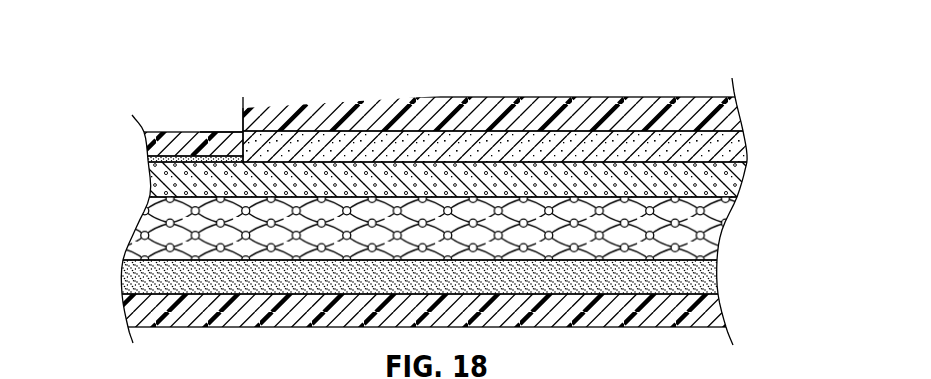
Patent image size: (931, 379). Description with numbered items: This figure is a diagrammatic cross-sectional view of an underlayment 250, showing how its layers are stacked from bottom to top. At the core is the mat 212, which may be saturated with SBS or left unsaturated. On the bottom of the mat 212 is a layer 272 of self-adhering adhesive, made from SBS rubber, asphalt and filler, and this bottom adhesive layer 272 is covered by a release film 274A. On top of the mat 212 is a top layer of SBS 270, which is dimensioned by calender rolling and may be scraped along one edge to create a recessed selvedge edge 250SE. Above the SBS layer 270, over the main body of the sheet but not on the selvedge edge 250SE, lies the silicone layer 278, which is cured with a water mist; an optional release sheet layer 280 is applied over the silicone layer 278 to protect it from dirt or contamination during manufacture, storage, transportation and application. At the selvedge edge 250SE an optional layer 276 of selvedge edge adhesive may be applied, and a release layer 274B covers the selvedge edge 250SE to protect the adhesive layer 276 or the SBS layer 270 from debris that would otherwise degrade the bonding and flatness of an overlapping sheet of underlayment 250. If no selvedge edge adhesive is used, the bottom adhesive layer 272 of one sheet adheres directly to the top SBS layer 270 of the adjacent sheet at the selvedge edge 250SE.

The underlayment 250 is at (434, 174).
The selvedge edge 250SE is at (219, 108).
The release layer 274B is at (175, 138).
The layer of selvedge edge adhesive 276 is at (145, 161).
The release sheet layer 280 is at (723, 113).
The silicone layer 278 is at (732, 147).
The top layer of SBS 270 is at (732, 178).
The mat 212 is at (720, 212).
The layer of adhesive 272 is at (692, 285).
The release film 274A is at (708, 308).